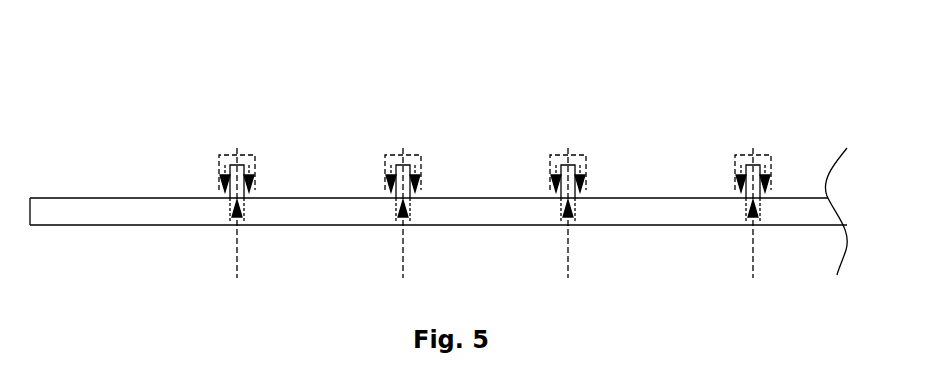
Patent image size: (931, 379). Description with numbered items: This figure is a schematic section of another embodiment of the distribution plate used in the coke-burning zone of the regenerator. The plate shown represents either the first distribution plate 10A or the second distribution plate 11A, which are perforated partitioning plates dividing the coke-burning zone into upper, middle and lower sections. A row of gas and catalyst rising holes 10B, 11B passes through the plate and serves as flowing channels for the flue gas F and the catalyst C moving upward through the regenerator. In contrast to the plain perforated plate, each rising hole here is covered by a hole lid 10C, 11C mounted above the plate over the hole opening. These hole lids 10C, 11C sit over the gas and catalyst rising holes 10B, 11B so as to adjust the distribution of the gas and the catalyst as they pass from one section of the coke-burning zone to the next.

The first distribution plate 10A is at (147, 185).
The second distribution plate 11A is at (155, 223).
The gas and catalyst rising hole 10B is at (404, 170).
The gas and catalyst rising hole 11B is at (404, 170).
The hole lid of distribution plate 10C is at (453, 126).
The hole lid of distribution plate 11C is at (453, 126).
The flue gas F is at (638, 165).
The catalyst C is at (638, 165).